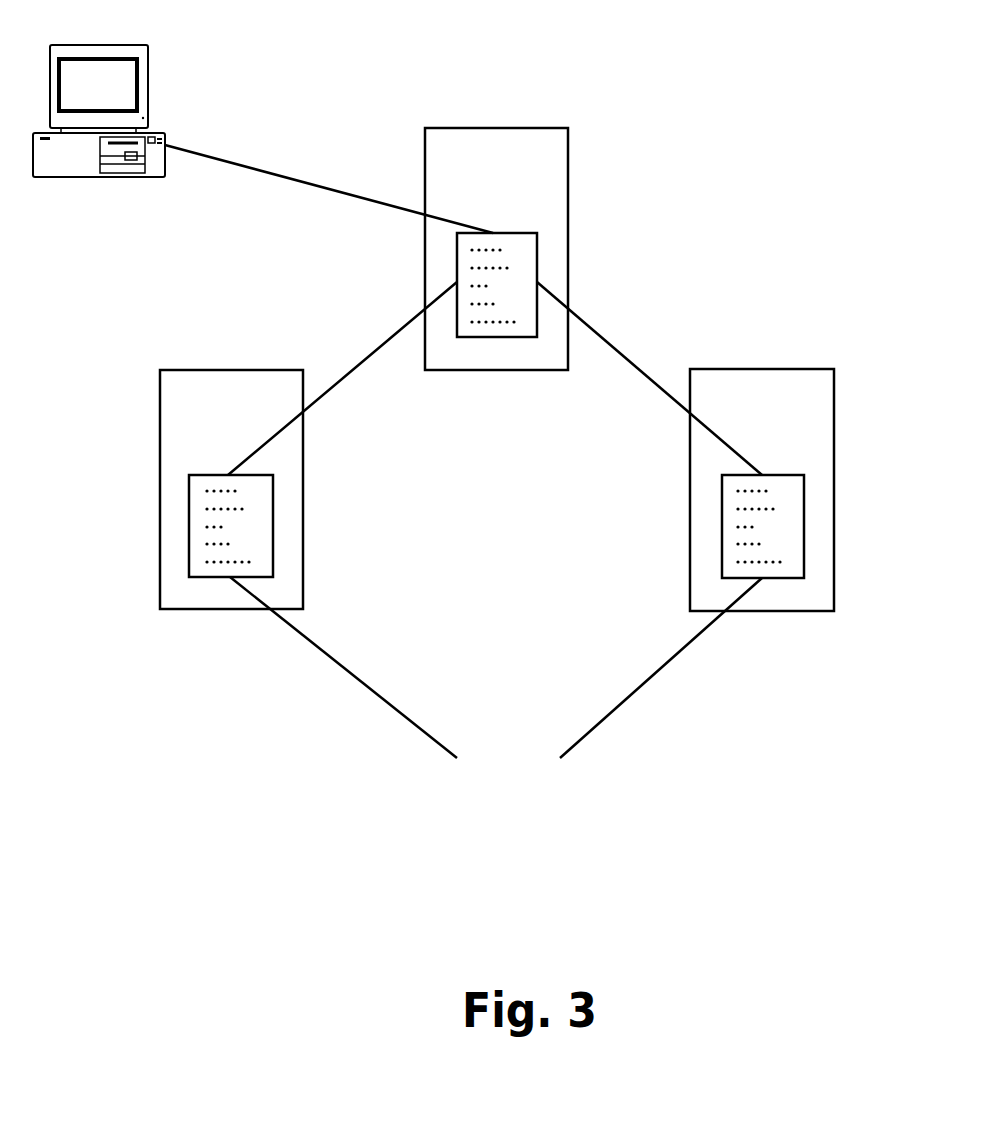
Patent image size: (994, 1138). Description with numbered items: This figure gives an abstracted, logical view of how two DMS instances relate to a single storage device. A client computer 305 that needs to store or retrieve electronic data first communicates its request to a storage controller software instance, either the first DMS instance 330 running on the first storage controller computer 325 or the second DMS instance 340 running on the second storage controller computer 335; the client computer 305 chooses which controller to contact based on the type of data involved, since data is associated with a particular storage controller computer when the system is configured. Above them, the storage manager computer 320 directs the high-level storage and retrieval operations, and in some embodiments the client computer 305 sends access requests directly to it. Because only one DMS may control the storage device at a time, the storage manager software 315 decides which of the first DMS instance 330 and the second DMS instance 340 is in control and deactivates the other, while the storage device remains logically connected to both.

The client computer 305 is at (150, 80).
The storage manager software 315 is at (537, 255).
The storage manager computer 320 is at (510, 128).
The first storage controller computer 325 is at (303, 470).
The first DMS instance 330 is at (273, 540).
The second storage controller computer 335 is at (834, 475).
The second DMS instance 340 is at (817, 536).